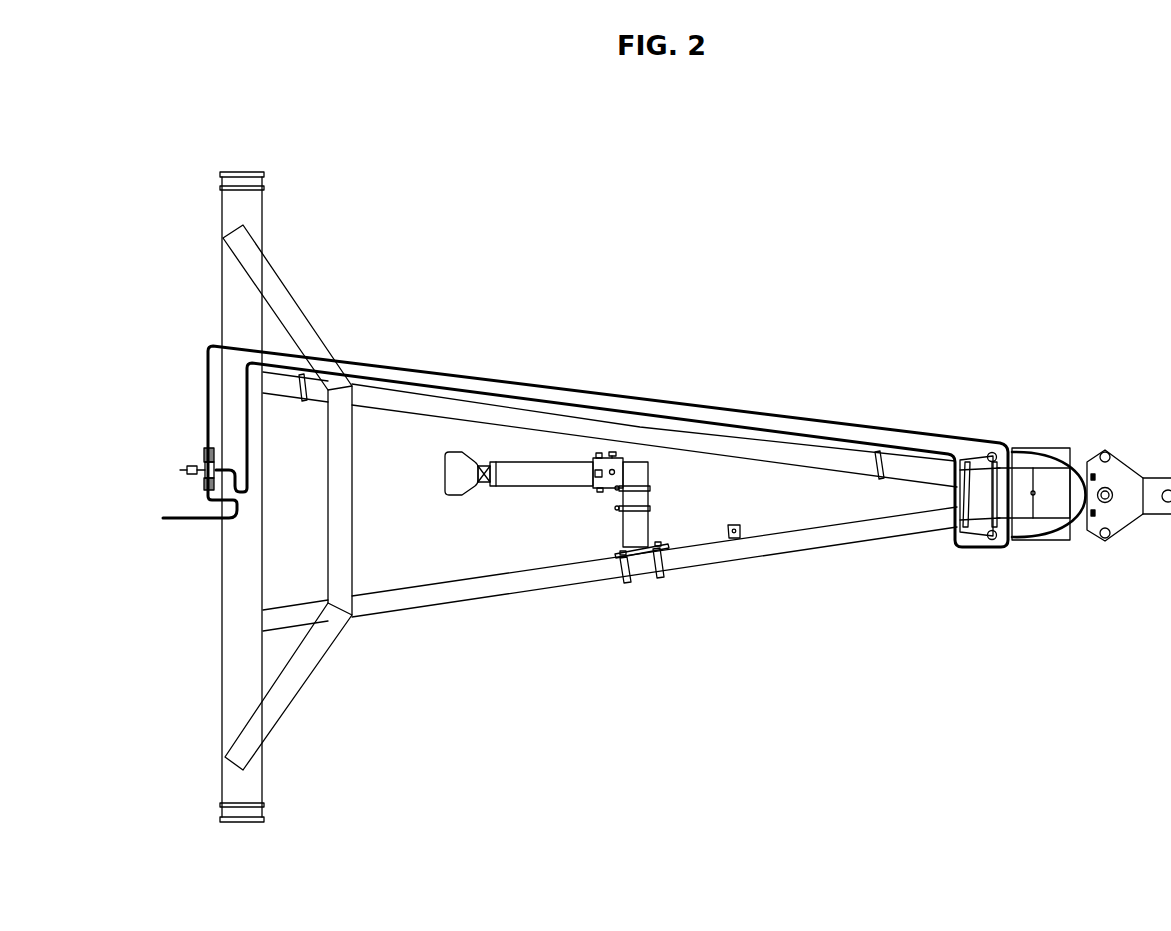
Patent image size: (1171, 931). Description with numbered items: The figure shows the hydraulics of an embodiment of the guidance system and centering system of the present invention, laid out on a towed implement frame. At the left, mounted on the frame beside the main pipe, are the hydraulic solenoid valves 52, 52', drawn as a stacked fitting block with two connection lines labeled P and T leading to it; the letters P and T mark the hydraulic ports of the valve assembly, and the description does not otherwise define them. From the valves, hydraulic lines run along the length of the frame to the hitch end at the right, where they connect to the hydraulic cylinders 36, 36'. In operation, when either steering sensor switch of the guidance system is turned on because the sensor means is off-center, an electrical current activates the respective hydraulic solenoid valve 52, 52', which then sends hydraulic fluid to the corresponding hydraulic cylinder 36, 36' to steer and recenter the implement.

The hydraulic solenoid valve 52 is at (163, 483).
The hydraulic solenoid valve 52' is at (178, 428).
The pressure port P is at (180, 470).
The tank port T is at (152, 520).
The hydraulic cylinder 36 is at (1050, 525).
The hydraulic cylinder 36' is at (1066, 470).